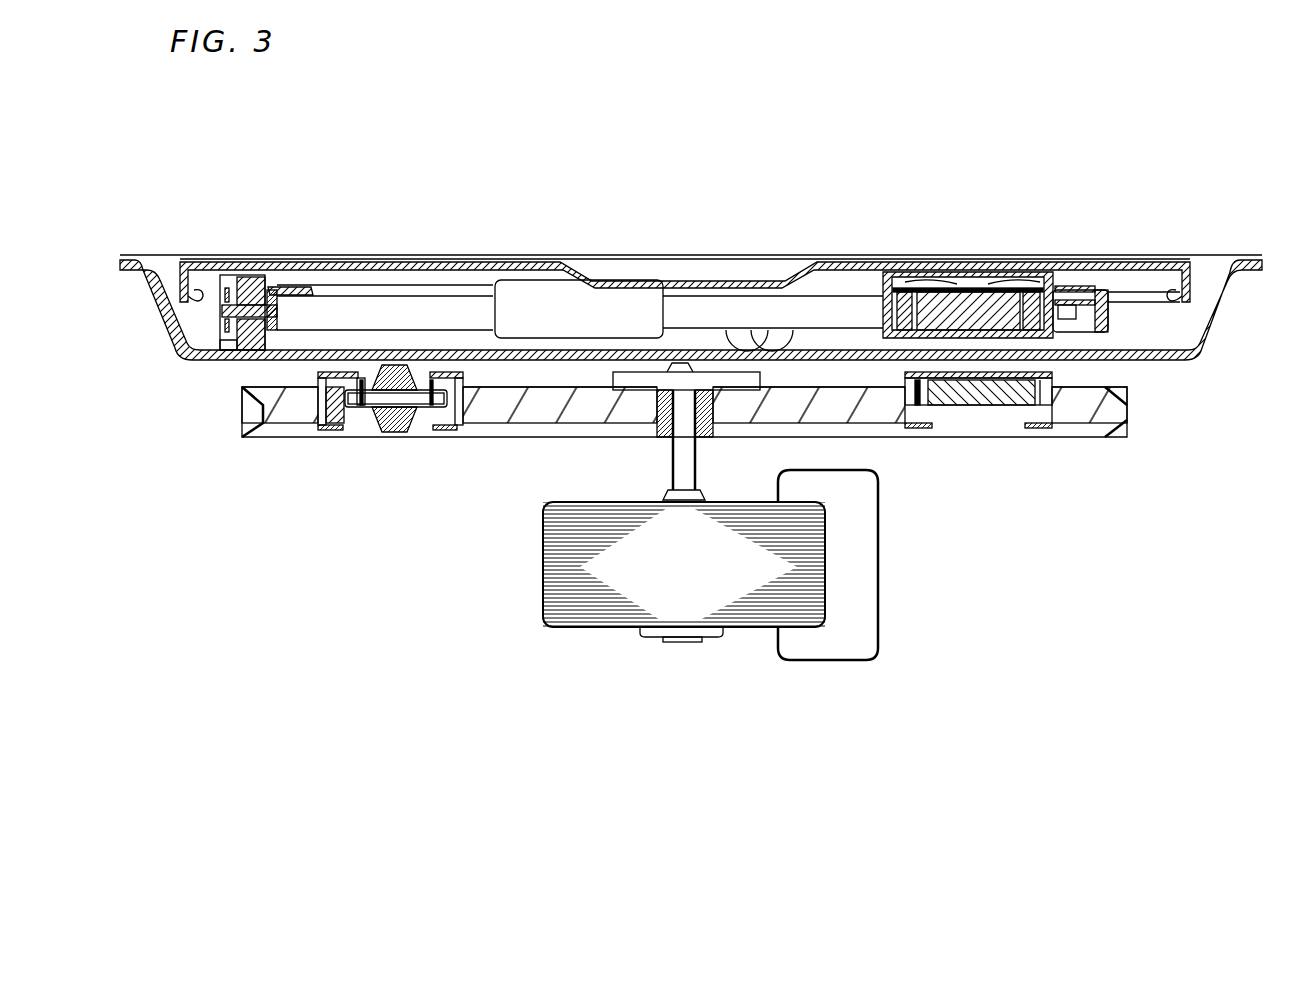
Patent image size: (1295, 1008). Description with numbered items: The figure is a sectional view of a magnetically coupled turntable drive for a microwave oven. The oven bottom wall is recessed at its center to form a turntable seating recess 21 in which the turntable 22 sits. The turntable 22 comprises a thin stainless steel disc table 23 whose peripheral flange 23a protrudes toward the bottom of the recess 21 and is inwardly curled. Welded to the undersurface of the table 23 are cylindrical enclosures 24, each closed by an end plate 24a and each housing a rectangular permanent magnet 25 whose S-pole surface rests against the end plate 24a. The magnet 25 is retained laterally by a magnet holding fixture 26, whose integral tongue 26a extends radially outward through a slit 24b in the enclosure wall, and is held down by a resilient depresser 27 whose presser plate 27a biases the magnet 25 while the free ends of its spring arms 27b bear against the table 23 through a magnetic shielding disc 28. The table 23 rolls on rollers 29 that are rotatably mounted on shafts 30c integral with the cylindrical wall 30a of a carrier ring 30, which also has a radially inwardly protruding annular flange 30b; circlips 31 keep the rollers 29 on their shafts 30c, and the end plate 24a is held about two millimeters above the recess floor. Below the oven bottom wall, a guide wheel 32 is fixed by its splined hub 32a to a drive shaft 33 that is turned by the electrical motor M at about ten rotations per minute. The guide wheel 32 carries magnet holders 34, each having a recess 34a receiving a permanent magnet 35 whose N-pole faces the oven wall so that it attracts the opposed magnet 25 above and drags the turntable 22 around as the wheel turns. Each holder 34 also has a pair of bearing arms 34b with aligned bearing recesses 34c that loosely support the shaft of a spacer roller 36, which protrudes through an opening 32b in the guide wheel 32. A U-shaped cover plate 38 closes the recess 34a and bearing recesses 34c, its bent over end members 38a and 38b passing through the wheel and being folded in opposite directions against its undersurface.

The turntable seating recess 21 is at (1152, 340).
The turntable 22 is at (478, 250).
The disc table 23 is at (542, 266).
The peripheral flange 23a is at (182, 272).
The cylindrical enclosure 24 is at (610, 305).
The end plate 24a is at (890, 303).
The slit 24b is at (1100, 292).
The permanent magnet 25 is at (972, 310).
The magnet holding fixture 26 is at (898, 275).
The tongue 26a is at (1120, 292).
The resilient depresser 27 is at (948, 292).
The presser plate 27a is at (1030, 300).
The spring arms 27b is at (1072, 300).
The magnetic shielding disc 28 is at (1005, 282).
The roller 29 is at (246, 283).
The carrier ring 30 is at (392, 300).
The cylindrical wall 30a is at (284, 288).
The annular flange 30b is at (272, 308).
The shaft 30c is at (232, 352).
The circlip 31 is at (226, 280).
The guide wheel 32 is at (535, 418).
The hub 32a is at (700, 440).
The opening 32b is at (378, 425).
The drive shaft 33 is at (675, 466).
The magnet holder 34 is at (360, 382).
The recess 34a is at (913, 392).
The bearing arm 34b is at (348, 385).
The bearing recess 34c is at (328, 428).
The permanent magnet 35 is at (1015, 385).
The spacer roller 36 is at (400, 432).
The cover plate 38 is at (318, 372).
The bent over end member 38a is at (328, 431).
The bent over end member 38b is at (908, 429).
The electrical motor M is at (568, 612).